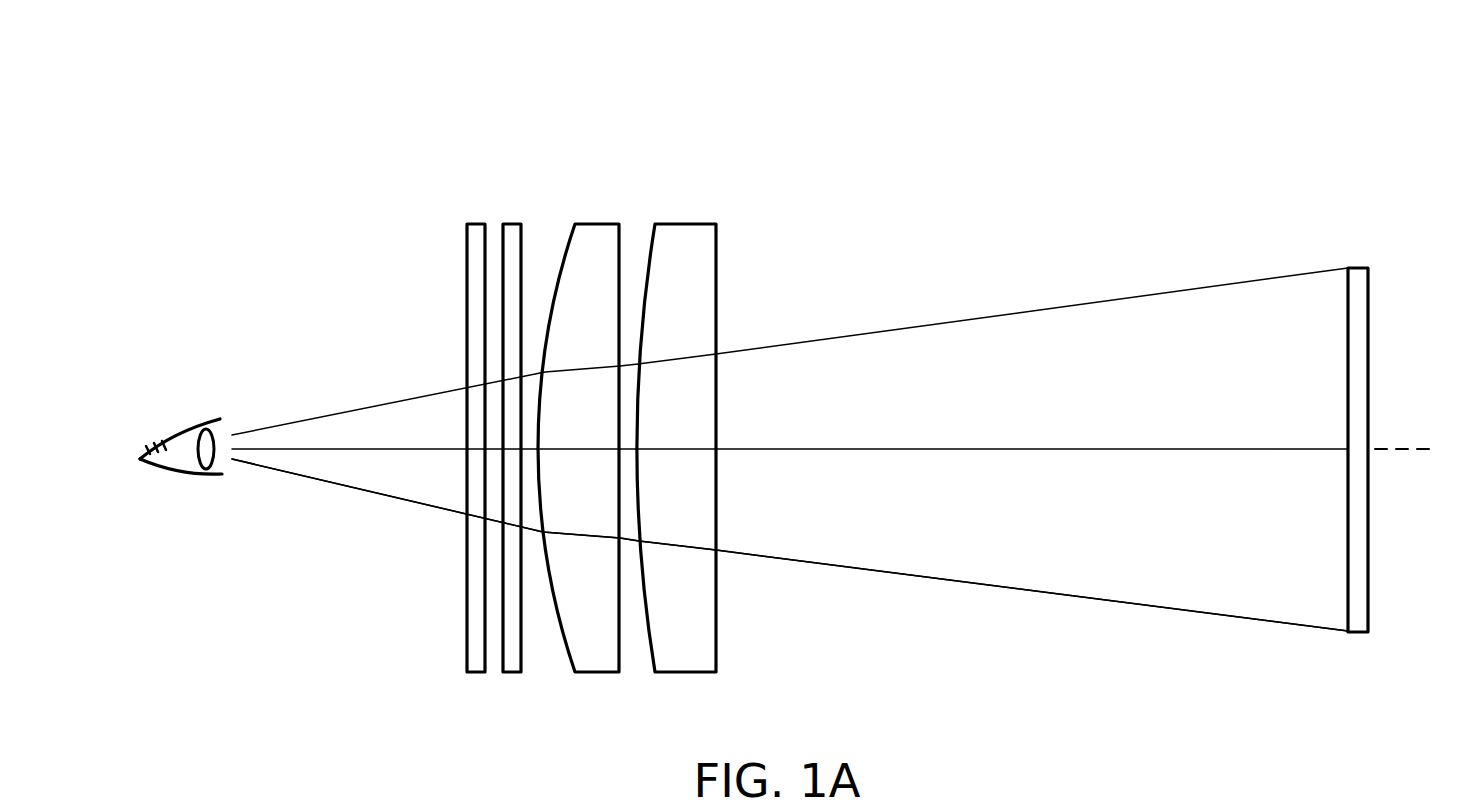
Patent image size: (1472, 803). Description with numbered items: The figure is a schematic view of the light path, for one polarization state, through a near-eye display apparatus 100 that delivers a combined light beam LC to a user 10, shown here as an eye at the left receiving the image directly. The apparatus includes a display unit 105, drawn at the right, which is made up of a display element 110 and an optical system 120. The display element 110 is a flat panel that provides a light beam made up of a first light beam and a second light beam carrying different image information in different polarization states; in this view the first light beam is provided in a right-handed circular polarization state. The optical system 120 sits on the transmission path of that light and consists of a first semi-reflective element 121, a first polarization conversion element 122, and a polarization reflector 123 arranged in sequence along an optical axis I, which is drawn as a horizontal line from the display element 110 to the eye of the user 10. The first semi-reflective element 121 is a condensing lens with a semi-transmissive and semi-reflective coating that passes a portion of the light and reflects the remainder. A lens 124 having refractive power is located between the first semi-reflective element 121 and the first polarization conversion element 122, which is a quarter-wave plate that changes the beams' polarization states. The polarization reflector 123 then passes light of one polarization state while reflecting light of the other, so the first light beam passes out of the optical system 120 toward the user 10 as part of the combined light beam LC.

The near-eye display apparatus 100 is at (1408, 729).
The user 10 is at (157, 408).
The combined light beam LC is at (255, 470).
The optical axis I is at (841, 451).
The optical system 120 is at (666, 128).
The first semi-reflective element 121 is at (687, 237).
The first polarization conversion element 122 is at (517, 237).
The polarization reflector 123 is at (482, 237).
The lens 124 is at (600, 237).
The display unit 105 is at (1232, 159).
The display element 110 is at (1357, 277).